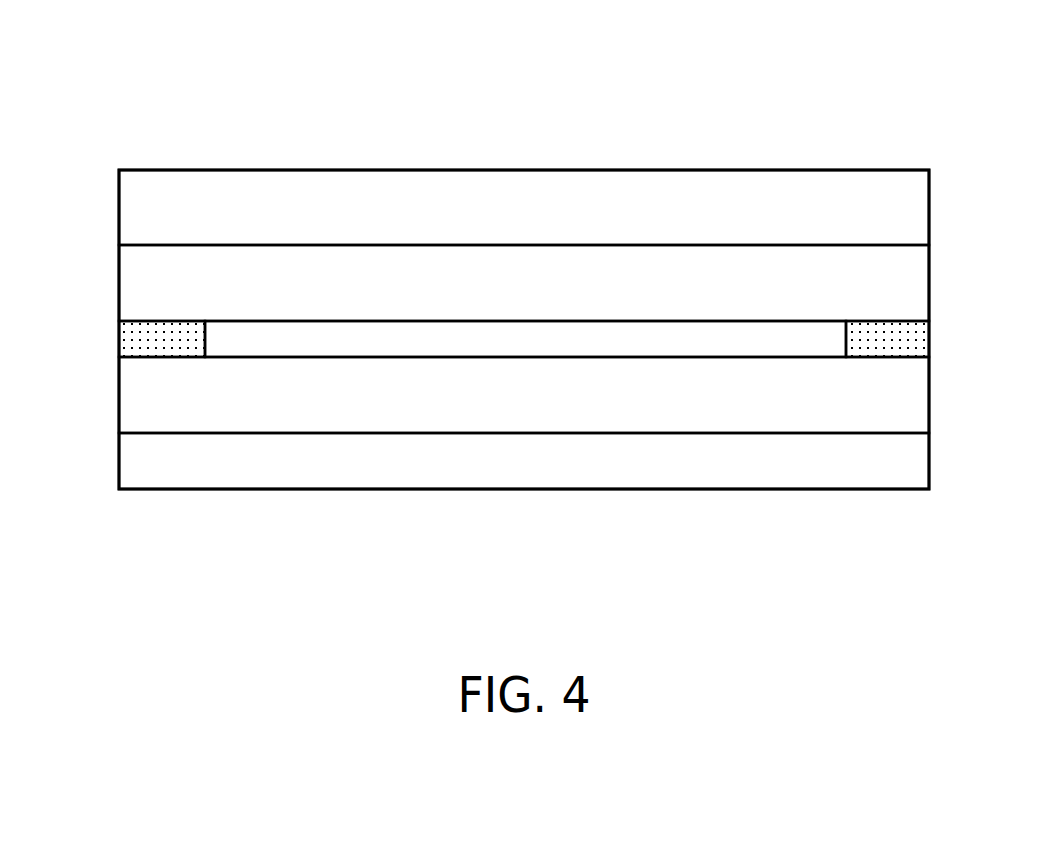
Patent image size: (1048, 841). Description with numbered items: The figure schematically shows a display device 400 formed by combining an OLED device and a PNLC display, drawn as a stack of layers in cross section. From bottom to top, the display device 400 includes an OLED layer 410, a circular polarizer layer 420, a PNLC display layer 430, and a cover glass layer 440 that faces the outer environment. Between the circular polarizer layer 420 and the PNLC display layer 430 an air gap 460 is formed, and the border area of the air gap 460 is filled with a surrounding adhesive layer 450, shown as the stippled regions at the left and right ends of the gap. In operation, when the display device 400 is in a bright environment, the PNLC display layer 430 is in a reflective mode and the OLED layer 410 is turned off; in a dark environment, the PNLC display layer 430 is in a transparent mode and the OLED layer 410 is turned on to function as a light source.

The display device 400 is at (553, 80).
The OLED layer 410 is at (137, 460).
The circular polarizer layer 420 is at (132, 393).
The PNLC display layer 430 is at (130, 283).
The cover glass layer 440 is at (130, 188).
The surrounding adhesive layer 450 is at (137, 350).
The air gap 460 is at (725, 345).